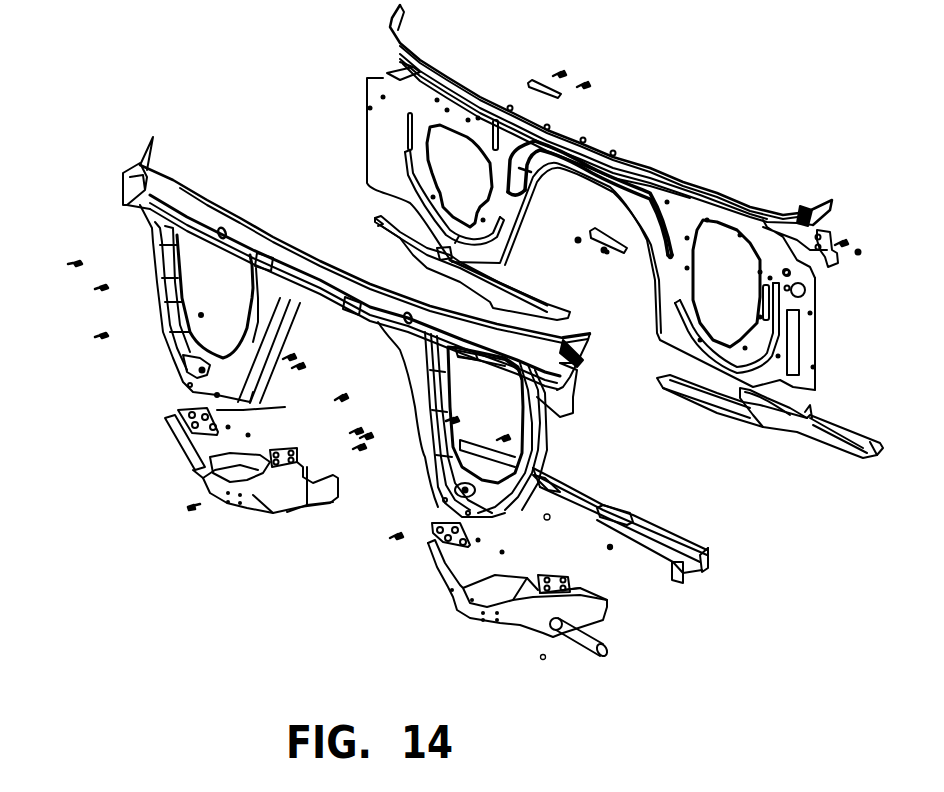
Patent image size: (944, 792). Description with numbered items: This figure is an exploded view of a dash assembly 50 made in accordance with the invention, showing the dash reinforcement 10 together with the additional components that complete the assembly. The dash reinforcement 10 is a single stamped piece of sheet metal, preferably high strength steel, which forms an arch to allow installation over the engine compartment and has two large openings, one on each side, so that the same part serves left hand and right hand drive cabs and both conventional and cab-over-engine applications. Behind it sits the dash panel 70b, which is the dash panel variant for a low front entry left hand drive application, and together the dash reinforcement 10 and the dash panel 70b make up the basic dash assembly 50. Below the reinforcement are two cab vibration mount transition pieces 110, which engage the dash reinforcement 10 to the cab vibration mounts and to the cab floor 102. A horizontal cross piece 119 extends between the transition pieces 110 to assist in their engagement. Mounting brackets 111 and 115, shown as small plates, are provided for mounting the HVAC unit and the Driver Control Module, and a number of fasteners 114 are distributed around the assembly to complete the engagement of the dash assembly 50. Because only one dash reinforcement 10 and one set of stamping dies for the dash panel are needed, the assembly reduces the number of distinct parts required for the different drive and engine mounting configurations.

The dash reinforcement 10 is at (248, 222).
The dash assembly 50 is at (790, 142).
The dash panel 70b is at (644, 135).
The floor 102 is at (372, 227).
The cab vibration mount transition piece 110 is at (238, 513).
The mounting bracket 111 is at (540, 80).
The fastener 114 is at (560, 72).
The mounting bracket 115 is at (283, 450).
The horizontal cross piece 119 is at (660, 518).